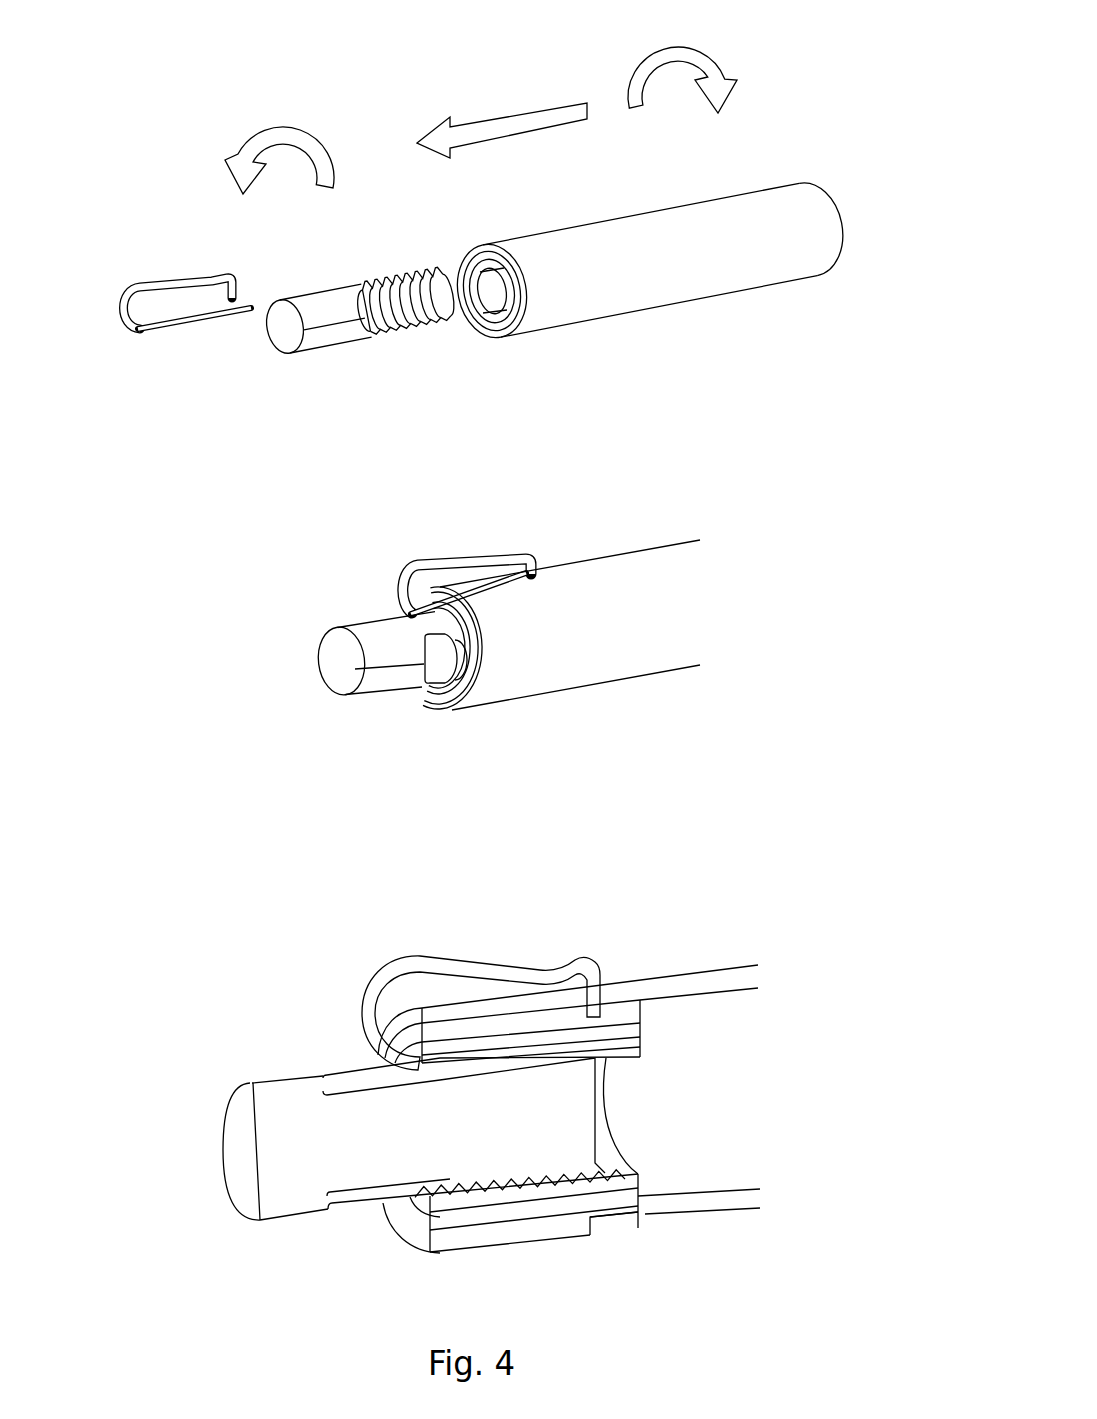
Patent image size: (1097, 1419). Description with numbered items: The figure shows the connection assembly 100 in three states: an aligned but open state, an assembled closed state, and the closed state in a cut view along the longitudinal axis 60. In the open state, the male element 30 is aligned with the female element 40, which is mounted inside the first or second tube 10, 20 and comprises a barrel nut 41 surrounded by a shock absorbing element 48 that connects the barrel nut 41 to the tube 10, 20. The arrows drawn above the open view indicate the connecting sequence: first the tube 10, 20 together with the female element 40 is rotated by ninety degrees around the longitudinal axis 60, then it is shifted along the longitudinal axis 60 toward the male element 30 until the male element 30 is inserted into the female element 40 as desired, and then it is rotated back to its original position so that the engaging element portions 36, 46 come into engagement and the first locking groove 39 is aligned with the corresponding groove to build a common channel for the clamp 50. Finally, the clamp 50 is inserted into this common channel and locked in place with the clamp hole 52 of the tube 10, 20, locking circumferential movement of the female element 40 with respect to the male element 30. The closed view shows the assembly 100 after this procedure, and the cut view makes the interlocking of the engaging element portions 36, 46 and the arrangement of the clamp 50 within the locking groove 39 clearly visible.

The first tube 10 is at (637, 667).
The second tube 20 is at (800, 163).
The male element 30 is at (345, 353).
The second engaging element portions 36 is at (535, 1239).
The first locking groove 39 is at (340, 1072).
The female element 40 is at (437, 227).
The barrel nut 41 is at (472, 257).
The engaging element portions 46 is at (546, 1183).
The shock absorbing element 48 is at (475, 297).
The clamp 50 is at (165, 263).
The clamp hole 52 is at (563, 213).
The longitudinal axis 60 is at (500, 106).
The connection assembly 100 is at (300, 110).